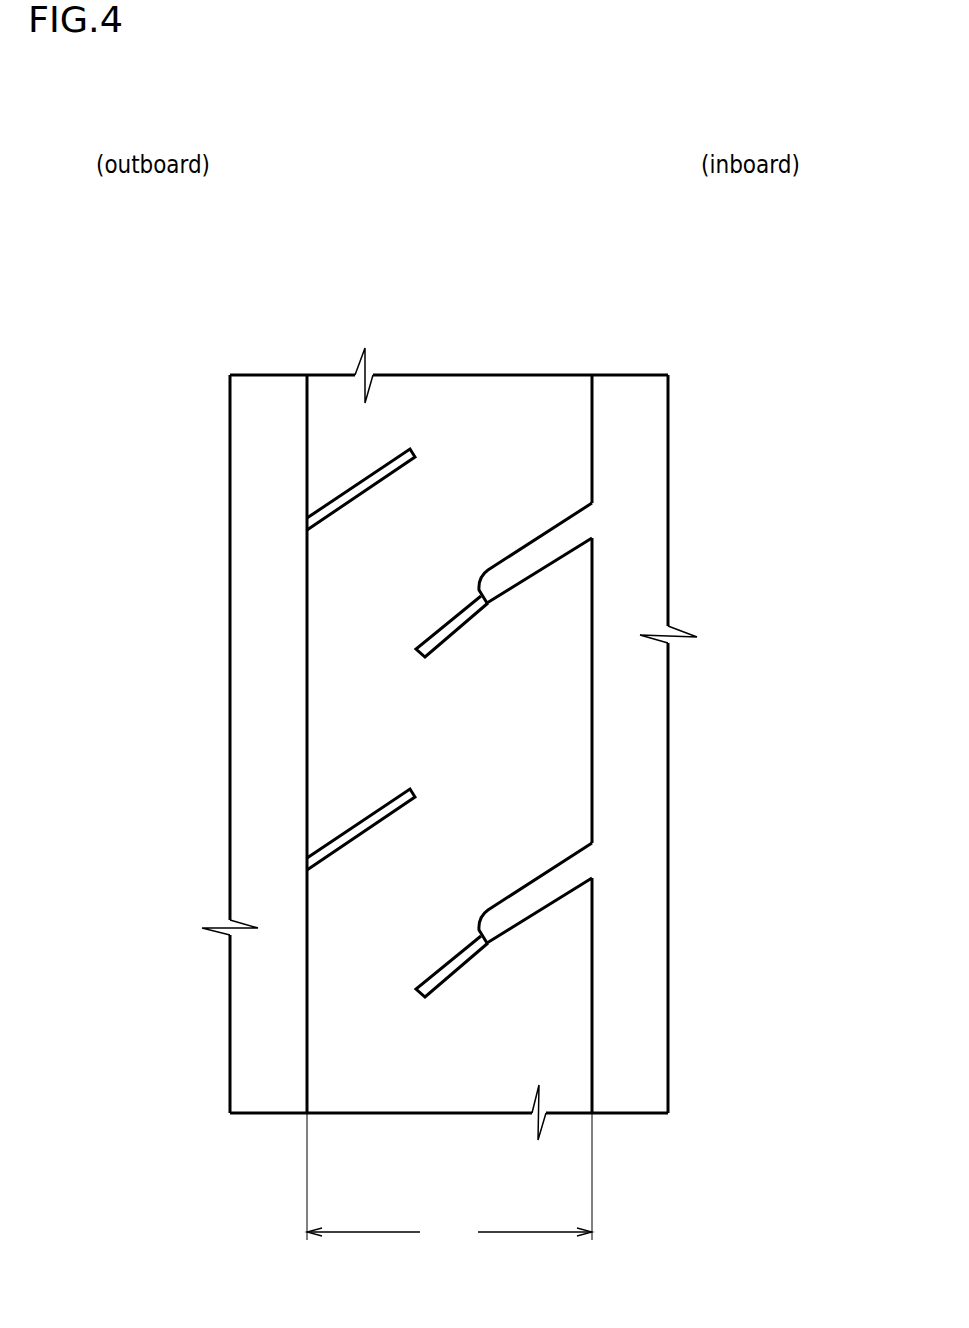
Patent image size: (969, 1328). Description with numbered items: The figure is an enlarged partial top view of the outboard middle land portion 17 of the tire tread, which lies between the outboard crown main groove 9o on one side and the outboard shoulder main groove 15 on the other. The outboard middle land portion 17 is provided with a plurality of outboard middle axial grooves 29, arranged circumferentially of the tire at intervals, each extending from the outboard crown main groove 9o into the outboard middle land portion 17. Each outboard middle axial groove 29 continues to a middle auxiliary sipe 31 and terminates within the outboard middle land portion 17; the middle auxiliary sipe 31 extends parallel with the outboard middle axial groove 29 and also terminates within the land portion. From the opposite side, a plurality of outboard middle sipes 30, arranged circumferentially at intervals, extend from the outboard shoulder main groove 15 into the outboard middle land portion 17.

The outboard shoulder main groove 15 is at (270, 425).
The outboard middle land portion 17 is at (474, 420).
The outboard crown main groove 9o is at (626, 423).
The outboard middle axial groove 29 is at (525, 556).
The outboard middle sipe 30 is at (340, 492).
The middle auxiliary sipe 31 is at (460, 623).